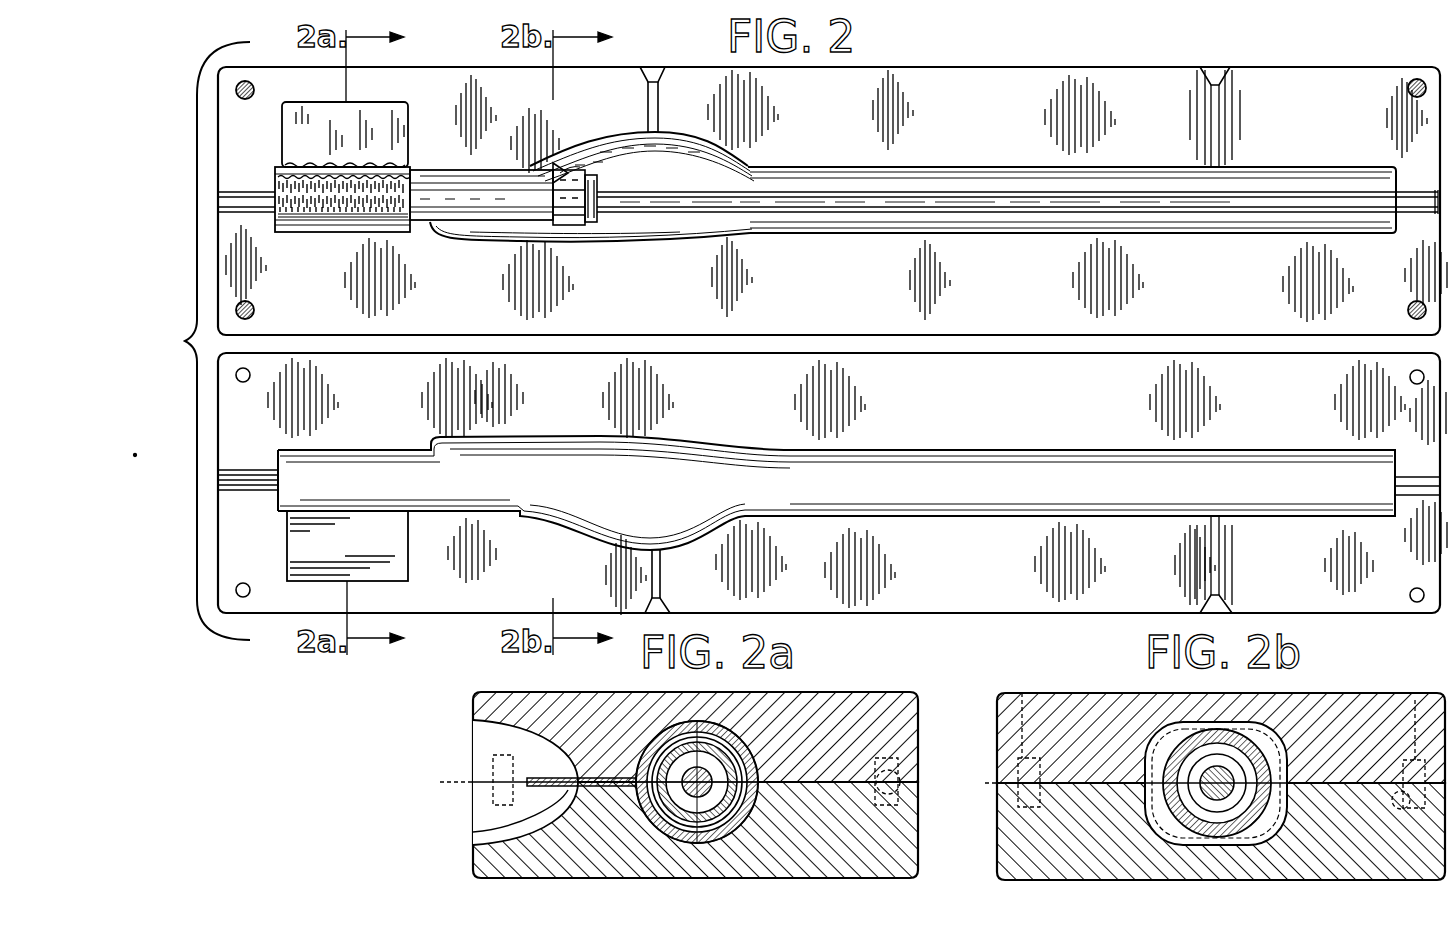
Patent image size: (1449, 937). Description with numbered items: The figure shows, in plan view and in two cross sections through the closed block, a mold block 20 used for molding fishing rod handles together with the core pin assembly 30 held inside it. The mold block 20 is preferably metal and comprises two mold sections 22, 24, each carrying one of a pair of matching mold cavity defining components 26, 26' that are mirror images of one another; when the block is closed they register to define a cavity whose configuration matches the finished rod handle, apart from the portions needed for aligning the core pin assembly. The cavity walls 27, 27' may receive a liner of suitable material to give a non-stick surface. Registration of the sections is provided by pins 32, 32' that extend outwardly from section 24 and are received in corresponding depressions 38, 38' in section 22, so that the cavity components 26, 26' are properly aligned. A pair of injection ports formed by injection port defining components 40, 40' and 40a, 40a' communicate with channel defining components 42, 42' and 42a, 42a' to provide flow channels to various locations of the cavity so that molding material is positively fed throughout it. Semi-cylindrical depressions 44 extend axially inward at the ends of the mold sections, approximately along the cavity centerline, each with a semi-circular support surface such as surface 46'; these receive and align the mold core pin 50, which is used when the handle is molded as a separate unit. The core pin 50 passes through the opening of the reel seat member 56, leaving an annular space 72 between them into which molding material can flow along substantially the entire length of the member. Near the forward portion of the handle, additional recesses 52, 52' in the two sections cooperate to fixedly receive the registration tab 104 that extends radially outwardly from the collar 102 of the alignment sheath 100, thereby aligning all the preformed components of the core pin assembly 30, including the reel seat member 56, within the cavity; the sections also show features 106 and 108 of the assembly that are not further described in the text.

In FIG. 2, the mold block 20 is at (198, 341).
In FIG. 2, the mold section 22 is at (1130, 68).
In FIG. 2A, the mold section 22 is at (835, 700).
In FIG. 2B, the mold section 22 is at (1085, 700).
In FIG. 2, the mold section 24 is at (958, 613).
In FIG. 2A, the mold section 24 is at (478, 878).
In FIG. 2B, the mold section 24 is at (1000, 860).
In FIG. 2, the mold cavity defining component 26 is at (1072, 224).
In FIG. 2, the mold cavity defining component 26' is at (1092, 506).
In FIG. 2, the cavity wall 27 is at (600, 207).
In FIG. 2B, the cavity wall 27 is at (1192, 752).
In FIG. 2, the cavity wall 27' is at (534, 479).
In FIG. 2, the core pin assembly 30 is at (298, 240).
In FIG. 2B, the pin 32 is at (1191, 799).
In FIG. 2B, the pin 32' is at (1391, 831).
In FIG. 2B, the depression 38 is at (1022, 732).
In FIG. 2B, the depression 38' is at (1422, 733).
In FIG. 2, the injection port defining component 40 is at (1215, 92).
In FIG. 2, the injection port defining component 40' is at (1249, 564).
In FIG. 2, the injection port defining component 40a is at (659, 76).
In FIG. 2, the injection port defining component 40a' is at (685, 581).
In FIG. 2, the channel defining component 42 is at (1260, 115).
In FIG. 2, the channel defining component 42' is at (1272, 553).
In FIG. 2, the channel defining component 42a is at (621, 116).
In FIG. 2, the channel defining component 42a' is at (605, 562).
In FIG. 2, the semi-cylindrical depression 44 is at (1405, 229).
In FIG. 2, the semi-circular support surface 46' is at (248, 461).
In FIG. 2, the mold core pin 50 is at (857, 200).
In FIG. 2A, the mold core pin 50 is at (755, 810).
In FIG. 2B, the mold core pin 50 is at (1225, 775).
In FIG. 2, the recess 52 is at (371, 134).
In FIG. 2A, the recess 52 is at (498, 782).
In FIG. 2, the recess 52' is at (371, 578).
In FIG. 2, the reel seat member 56 is at (478, 207).
In FIG. 2A, the reel seat member 56 is at (668, 832).
In FIG. 2B, the reel seat member 56 is at (1268, 818).
In FIG. 2A, the annular space 72 is at (648, 757).
In FIG. 2, the alignment sheath 100 is at (392, 242).
In FIG. 2A, the alignment sheath 100 is at (630, 812).
In FIG. 2A, the collar 102 is at (760, 762).
In FIG. 2, the registration tab 104 is at (365, 102).
In FIG. 2A, the registration tab 104 is at (478, 830).
In FIG. 2, the key rod 106 is at (480, 168).
In FIG. 2A, the key rod 106 is at (640, 775).
In FIG. 2, the liner 108 is at (590, 168).
In FIG. 2B, the liner 108 is at (1160, 810).